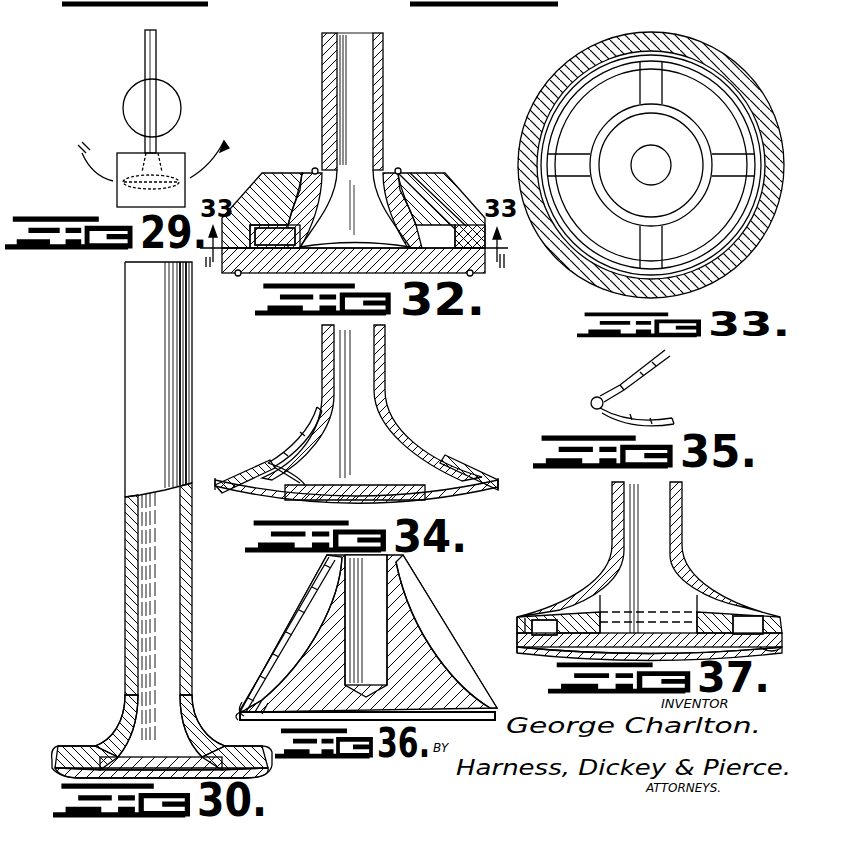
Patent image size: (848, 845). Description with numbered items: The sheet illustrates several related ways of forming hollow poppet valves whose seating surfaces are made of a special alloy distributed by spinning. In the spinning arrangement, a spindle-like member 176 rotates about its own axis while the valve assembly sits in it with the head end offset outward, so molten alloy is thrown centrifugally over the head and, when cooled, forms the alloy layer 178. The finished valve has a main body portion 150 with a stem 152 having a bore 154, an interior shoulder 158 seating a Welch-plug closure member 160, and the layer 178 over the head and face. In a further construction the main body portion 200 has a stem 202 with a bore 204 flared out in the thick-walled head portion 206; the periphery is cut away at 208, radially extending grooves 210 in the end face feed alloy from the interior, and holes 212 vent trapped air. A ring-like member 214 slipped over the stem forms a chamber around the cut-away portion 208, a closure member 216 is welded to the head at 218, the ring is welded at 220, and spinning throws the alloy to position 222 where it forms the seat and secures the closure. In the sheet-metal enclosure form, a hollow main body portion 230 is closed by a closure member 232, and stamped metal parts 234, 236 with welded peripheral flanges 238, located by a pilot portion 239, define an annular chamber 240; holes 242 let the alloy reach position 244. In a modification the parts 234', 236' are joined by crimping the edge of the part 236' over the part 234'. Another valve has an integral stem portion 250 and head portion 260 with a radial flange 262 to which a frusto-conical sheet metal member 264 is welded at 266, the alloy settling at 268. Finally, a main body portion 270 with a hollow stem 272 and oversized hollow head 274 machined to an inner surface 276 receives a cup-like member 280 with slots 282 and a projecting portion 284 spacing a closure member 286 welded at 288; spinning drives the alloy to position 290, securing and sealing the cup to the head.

In FIG. 30, the main body portion 150 is at (147, 337).
In FIG. 30, the stem 152 is at (136, 356).
In FIG. 30, the bore 154 is at (155, 514).
In FIG. 30, the shoulder 158 is at (210, 755).
In FIG. 30, the closure member 160 is at (123, 752).
In FIG. 29, the spindle member 176 is at (178, 106).
In FIG. 30, the alloy layer 178 is at (62, 750).
In FIG. 32, the main body portion 200 is at (386, 50).
In FIG. 32, the stem 202 is at (381, 80).
In FIG. 32, the bore 204 is at (362, 100).
In FIG. 32, the head portion 206 is at (398, 192).
In FIG. 32, the cut-away portion 208 is at (430, 225).
In FIG. 32, the radially extending grooves 210 is at (470, 275).
In FIG. 33, the radially extending grooves 210 is at (635, 92).
In FIG. 32, the holes 212 is at (276, 194).
In FIG. 32, the ring-like member 214 is at (432, 180).
In FIG. 33, the ring-like member 214 is at (742, 253).
In FIG. 32, the closure member 216 is at (248, 276).
In FIG. 32, the weld 218 is at (236, 275).
In FIG. 32, the weld 220 is at (398, 168).
In FIG. 32, the alloy 222 is at (458, 224).
In FIG. 34, the main body portion 230 is at (322, 341).
In FIG. 34, the closure member 232 is at (375, 480).
In FIG. 34, the stamped metal part 234 is at (282, 437).
In FIG. 35, the stamped metal part 234' is at (651, 379).
In FIG. 34, the stamped metal part 236 is at (361, 500).
In FIG. 35, the stamped metal part 236' is at (661, 411).
In FIG. 34, the peripheral flanges 238 is at (499, 486).
In FIG. 34, the pilot portion 239 is at (395, 503).
In FIG. 34, the annular chamber 240 is at (233, 476).
In FIG. 34, the holes 242 is at (310, 480).
In FIG. 34, the alloy 244 is at (362, 447).
In FIG. 36, the stem portion 250 is at (395, 580).
In FIG. 36, the head portion 260 is at (437, 622).
In FIG. 36, the radial flange 262 is at (500, 712).
In FIG. 36, the frusto-conical sheet metal member 264 is at (300, 612).
In FIG. 36, the weld 266 is at (240, 712).
In FIG. 36, the alloy 268 is at (258, 692).
In FIG. 37, the main body portion 270 is at (684, 493).
In FIG. 37, the hollow stem 272 is at (680, 524).
In FIG. 37, the hollow head 274 is at (716, 572).
In FIG. 37, the inner surface 276 is at (752, 612).
In FIG. 37, the cup-like member 280 is at (636, 626).
In FIG. 37, the radially directed slots 282 is at (578, 600).
In FIG. 37, the projecting portion 284 is at (722, 652).
In FIG. 37, the closure member 286 is at (548, 655).
In FIG. 37, the weld 288 is at (517, 630).
In FIG. 37, the alloy 290 is at (524, 648).